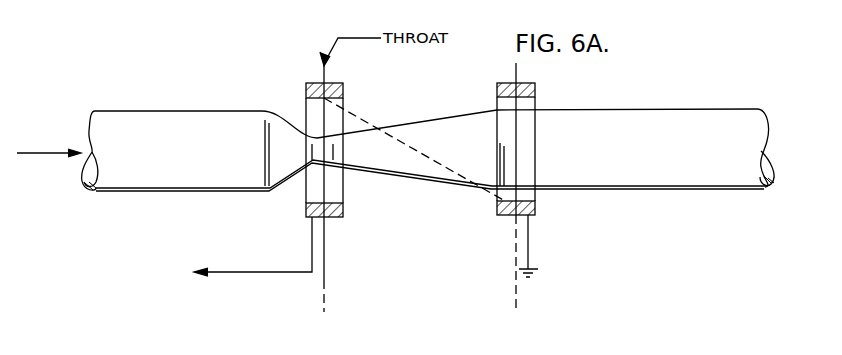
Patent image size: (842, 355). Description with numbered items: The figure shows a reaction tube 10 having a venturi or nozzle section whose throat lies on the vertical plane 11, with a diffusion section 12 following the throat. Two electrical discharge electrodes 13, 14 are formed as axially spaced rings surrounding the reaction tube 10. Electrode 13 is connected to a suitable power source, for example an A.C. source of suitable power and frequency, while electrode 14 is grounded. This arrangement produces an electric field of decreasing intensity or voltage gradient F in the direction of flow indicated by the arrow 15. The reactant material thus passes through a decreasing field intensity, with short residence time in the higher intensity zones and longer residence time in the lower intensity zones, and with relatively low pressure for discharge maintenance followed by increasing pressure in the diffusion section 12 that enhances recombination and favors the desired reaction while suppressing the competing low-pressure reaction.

The reaction tube 10 is at (183, 118).
The vertical plane 11 is at (327, 258).
The diffusion section 12 is at (431, 178).
The electrical discharge electrode 13 is at (306, 91).
The electrical discharge electrode 14 is at (530, 91).
The arrow 15 is at (47, 157).
The electric field of decreasing intensity F is at (406, 150).